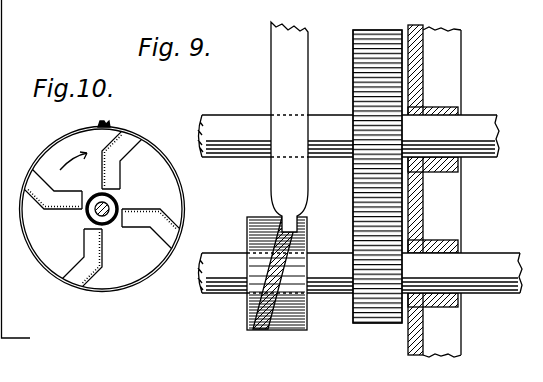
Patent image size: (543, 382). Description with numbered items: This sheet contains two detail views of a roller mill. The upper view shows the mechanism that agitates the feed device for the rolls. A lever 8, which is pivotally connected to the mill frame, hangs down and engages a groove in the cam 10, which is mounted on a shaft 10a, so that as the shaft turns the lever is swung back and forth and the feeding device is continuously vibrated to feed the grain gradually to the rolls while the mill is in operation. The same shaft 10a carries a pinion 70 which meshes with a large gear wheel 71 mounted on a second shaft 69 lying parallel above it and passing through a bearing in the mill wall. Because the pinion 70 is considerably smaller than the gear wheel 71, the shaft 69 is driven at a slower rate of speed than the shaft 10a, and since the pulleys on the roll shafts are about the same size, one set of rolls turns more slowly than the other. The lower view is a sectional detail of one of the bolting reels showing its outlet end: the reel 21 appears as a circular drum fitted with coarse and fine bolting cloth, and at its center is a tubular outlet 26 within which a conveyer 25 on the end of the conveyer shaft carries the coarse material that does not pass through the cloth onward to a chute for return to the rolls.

In FIG. 9, the lever 8 is at (289, 127).
In FIG. 9, the shaft 69 is at (327, 125).
In FIG. 9, the gear wheel 71 is at (381, 28).
In FIG. 9, the pinion 70 is at (386, 325).
In FIG. 9, the cam 10 is at (292, 330).
In FIG. 9, the shaft 10a is at (344, 288).
In FIG. 10, the reel 21 is at (184, 181).
In FIG. 10, the conveyer 25 is at (118, 201).
In FIG. 10, the tubular outlet 26 is at (110, 221).